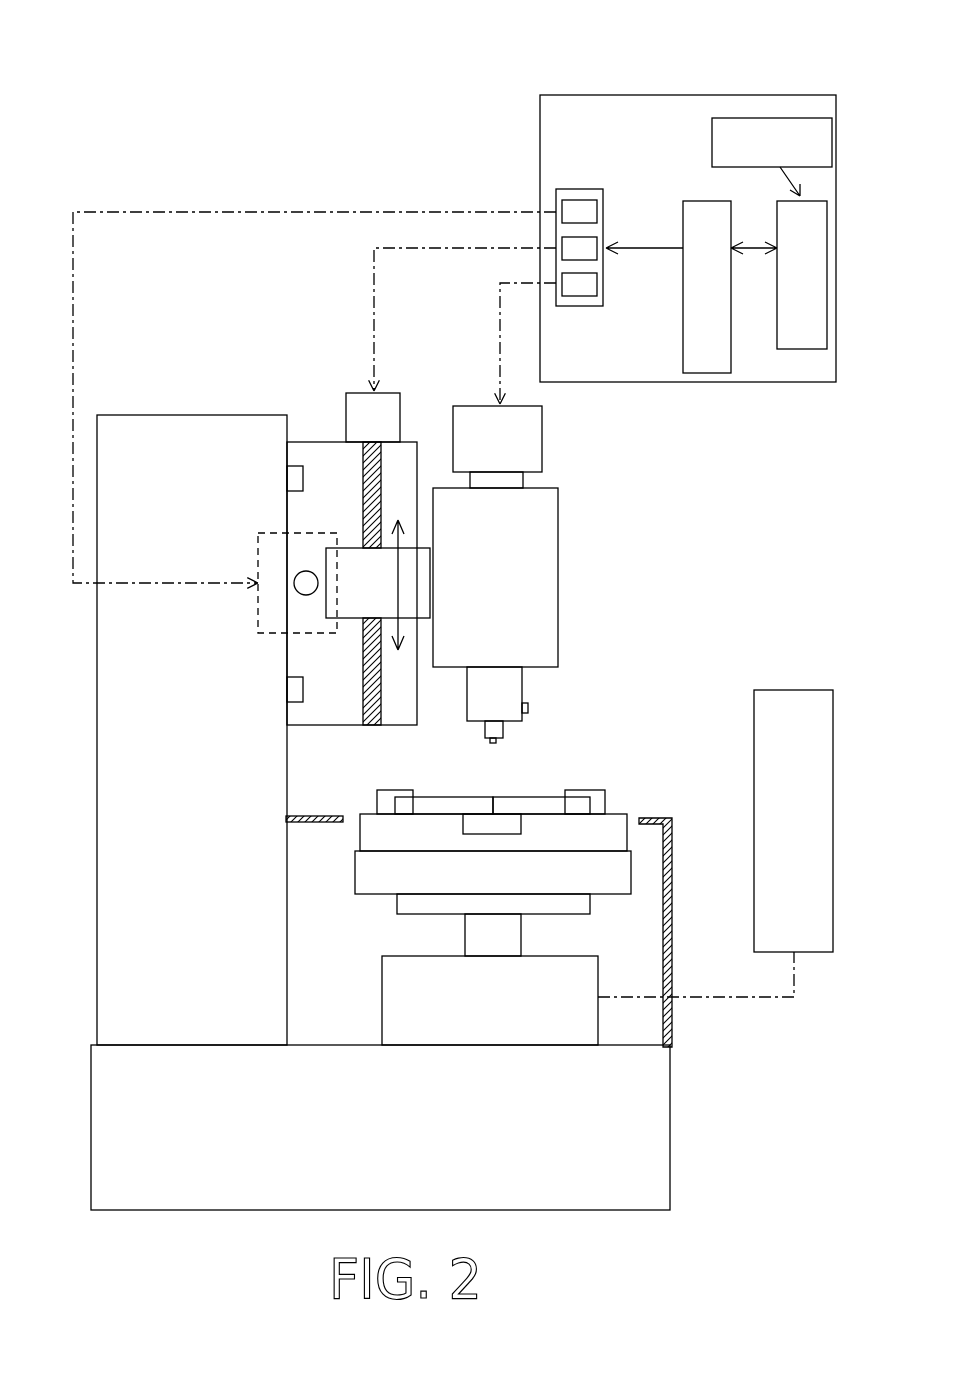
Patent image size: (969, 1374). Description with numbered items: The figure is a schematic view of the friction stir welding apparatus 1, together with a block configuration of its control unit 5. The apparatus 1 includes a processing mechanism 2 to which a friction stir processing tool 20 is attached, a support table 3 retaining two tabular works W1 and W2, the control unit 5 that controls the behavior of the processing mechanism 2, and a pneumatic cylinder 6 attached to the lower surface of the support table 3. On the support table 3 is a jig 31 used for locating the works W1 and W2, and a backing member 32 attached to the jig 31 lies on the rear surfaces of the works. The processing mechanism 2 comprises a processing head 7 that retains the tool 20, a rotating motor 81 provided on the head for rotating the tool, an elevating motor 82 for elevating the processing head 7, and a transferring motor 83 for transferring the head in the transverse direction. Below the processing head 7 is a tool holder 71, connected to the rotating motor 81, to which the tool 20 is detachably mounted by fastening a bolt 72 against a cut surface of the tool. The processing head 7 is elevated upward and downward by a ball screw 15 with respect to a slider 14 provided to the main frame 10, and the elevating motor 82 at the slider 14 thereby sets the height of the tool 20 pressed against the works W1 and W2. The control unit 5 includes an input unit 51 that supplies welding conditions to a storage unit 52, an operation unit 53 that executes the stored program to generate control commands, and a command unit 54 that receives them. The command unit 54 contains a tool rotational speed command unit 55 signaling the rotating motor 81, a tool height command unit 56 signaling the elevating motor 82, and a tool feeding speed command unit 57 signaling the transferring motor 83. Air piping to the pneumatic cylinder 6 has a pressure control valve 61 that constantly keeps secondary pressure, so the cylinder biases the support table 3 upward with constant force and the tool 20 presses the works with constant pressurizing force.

The friction stir welding apparatus 1 is at (389, 125).
The processing mechanism 2 is at (590, 489).
The support table 3 is at (625, 872).
The control unit 5 is at (657, 97).
The pneumatic cylinder 6 is at (585, 977).
The processing head 7 is at (547, 587).
The main frame 10 is at (652, 1123).
The slider 14 is at (325, 455).
The ball screw 15 is at (382, 473).
The friction stir processing tool 20 is at (503, 730).
The jig 31 is at (617, 825).
The backing member 32 is at (490, 826).
The input unit 51 is at (783, 118).
The storage unit 52 is at (827, 248).
The operation unit 53 is at (705, 201).
The command unit 54 is at (575, 189).
The tool rotational speed command unit 55 is at (585, 296).
The tool height command unit 56 is at (585, 238).
The tool feeding speed command unit 57 is at (590, 200).
The pressure control valve 61 is at (795, 690).
The tool holder 71 is at (517, 690).
The bolt 72 is at (528, 710).
The rotating motor 81 is at (542, 448).
The elevating motor 82 is at (346, 417).
The transferring motor 83 is at (257, 553).
The work W1 is at (443, 795).
The work W2 is at (543, 797).